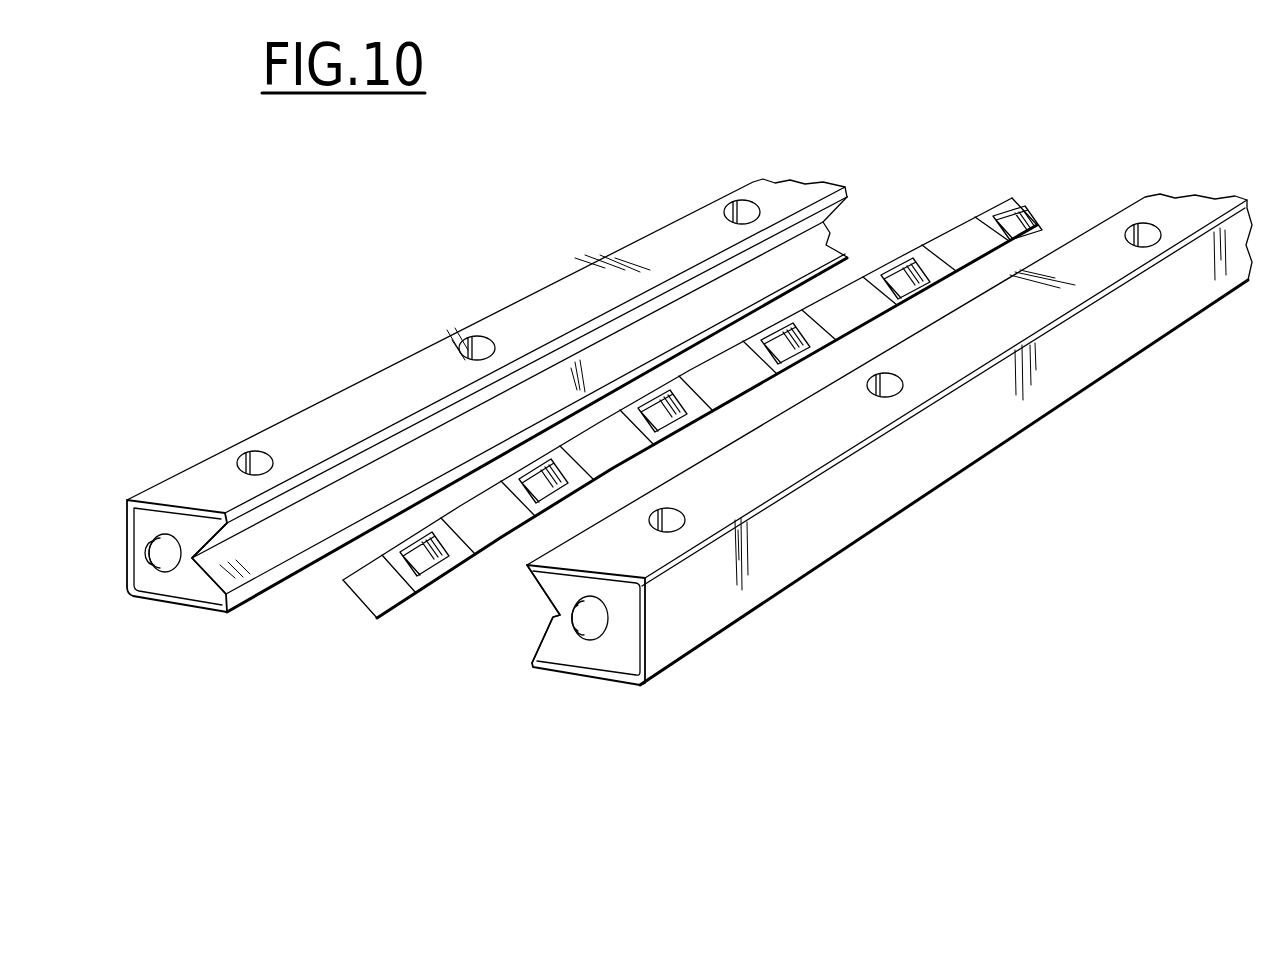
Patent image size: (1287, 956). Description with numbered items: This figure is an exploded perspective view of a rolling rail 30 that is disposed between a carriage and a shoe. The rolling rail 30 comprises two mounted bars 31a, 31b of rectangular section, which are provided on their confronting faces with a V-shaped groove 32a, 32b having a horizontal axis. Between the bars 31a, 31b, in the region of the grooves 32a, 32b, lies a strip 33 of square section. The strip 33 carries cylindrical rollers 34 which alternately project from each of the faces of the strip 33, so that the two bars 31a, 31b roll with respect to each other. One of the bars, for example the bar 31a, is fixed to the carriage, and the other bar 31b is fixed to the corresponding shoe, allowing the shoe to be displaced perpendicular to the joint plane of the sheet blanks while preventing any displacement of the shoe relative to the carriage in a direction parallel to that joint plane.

The rolling rail 30 is at (990, 194).
The bar 31a is at (408, 368).
The bar 31b is at (898, 473).
The V-shaped groove 32a is at (247, 533).
The V-shaped groove 32b is at (548, 614).
The strip 33 is at (373, 596).
The cylindrical rollers 34 is at (907, 273).